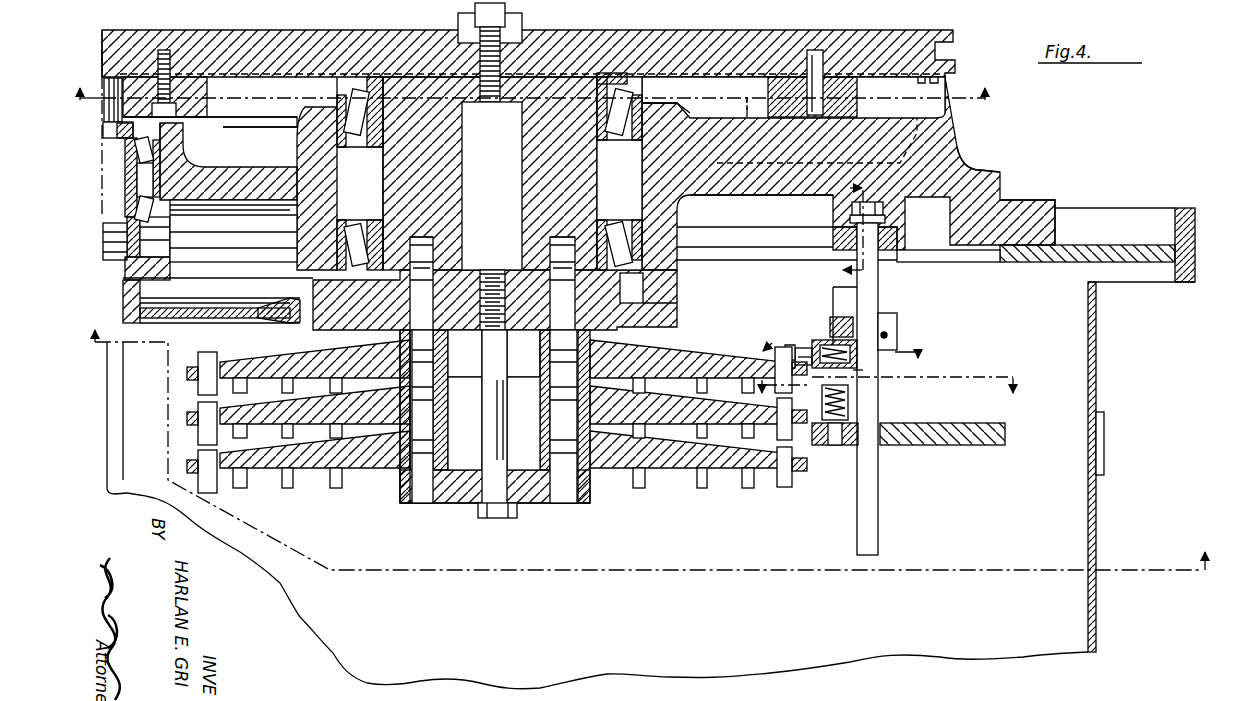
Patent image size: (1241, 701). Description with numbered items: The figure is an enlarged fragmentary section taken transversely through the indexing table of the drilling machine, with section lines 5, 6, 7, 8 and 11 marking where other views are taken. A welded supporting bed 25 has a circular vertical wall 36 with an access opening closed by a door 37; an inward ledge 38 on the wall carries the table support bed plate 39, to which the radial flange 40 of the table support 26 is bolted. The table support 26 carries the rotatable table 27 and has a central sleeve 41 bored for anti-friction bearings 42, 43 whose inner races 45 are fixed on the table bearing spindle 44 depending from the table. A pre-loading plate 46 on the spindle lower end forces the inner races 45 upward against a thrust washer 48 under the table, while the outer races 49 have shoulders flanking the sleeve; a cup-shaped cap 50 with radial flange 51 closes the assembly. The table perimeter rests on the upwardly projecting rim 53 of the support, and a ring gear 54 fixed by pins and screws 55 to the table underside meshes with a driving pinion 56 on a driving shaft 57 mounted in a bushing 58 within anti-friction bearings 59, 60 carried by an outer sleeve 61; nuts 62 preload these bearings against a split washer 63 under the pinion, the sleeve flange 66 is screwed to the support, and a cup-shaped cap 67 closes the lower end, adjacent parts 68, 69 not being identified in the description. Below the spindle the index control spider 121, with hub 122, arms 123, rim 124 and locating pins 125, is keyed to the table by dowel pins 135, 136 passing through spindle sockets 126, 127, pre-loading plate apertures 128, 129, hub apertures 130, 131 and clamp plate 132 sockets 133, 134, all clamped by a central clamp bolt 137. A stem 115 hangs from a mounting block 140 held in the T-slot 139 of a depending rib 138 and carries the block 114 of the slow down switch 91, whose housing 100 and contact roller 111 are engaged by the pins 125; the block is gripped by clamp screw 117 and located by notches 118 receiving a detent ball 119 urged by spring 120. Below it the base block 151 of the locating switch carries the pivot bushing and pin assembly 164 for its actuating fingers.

The supporting bed 25 is at (913, 650).
The table support 26 is at (947, 137).
The rotatable table 27 is at (918, 34).
The vertical wall 36 is at (1092, 335).
The door 37 is at (1098, 400).
The ledge 38 is at (1033, 262).
The table support bed plate 39 is at (1040, 205).
The radial flange 40 is at (990, 173).
The central sleeve 41 is at (787, 243).
The anti-friction bearing 42 is at (353, 150).
The anti-friction bearing 43 is at (355, 220).
The table bearing spindle 44 is at (533, 175).
The inner races 45 is at (607, 140).
The pre-loading plate 46 is at (643, 290).
The thrust bearing or washer 48 is at (613, 80).
The outer races 49 is at (647, 113).
The cup-shaped cap 50 is at (673, 305).
The radial flange 51 is at (707, 270).
The rim or flange 53 is at (953, 87).
The ring gear 54 is at (777, 87).
The pins and screws 55 is at (172, 60).
The driving pinion 56 is at (104, 88).
The driving shaft 57 is at (152, 181).
The bushing 58 is at (130, 195).
The anti-friction bearing 59 is at (168, 132).
The anti-friction bearing 60 is at (170, 223).
The outer sleeve 61 is at (160, 142).
The nuts 62 is at (160, 250).
The split washer 63 is at (117, 130).
The radial flange 66 is at (170, 211).
The cup-shaped cap 67 is at (173, 278).
The tube 68 is at (237, 313).
The nut 69 is at (303, 303).
The slow down or anticipating switch 91 is at (816, 294).
The housing 100 is at (848, 308).
The contact roller 111 is at (803, 348).
The block 114 is at (897, 317).
The stem or rod 115 is at (872, 284).
The clamp screw 117 is at (888, 336).
The notches 118 is at (863, 337).
The spring pressed detent or ball 119 is at (869, 362).
The spring 120 is at (825, 328).
The disc or spider 121 is at (730, 352).
The hub 122 is at (455, 360).
The arms 123 is at (337, 352).
The rim or ring 124 is at (225, 353).
The pins 125 is at (792, 345).
The socket 126 is at (450, 250).
The socket 127 is at (530, 300).
The aperture 128 is at (433, 285).
The aperture 129 is at (530, 305).
The aperture 130 is at (452, 362).
The aperture 131 is at (533, 366).
The clamp plate 132 is at (540, 503).
The socket 133 is at (403, 493).
The socket 134 is at (590, 490).
The dowel pins 135 is at (425, 418).
The dowel pins 136 is at (557, 410).
The central clamp bolt 137 is at (497, 518).
The depending rib 138 is at (828, 217).
The T-slot 139 is at (880, 204).
The mounting block 140 is at (893, 263).
The base block 151 is at (945, 446).
The bushing and pin assembly 164 is at (838, 446).
The section line 5- 5 is at (648, 460).
The section line 6- 6 is at (532, 133).
The section line 7- 7 is at (845, 229).
The section line 8- 8 is at (887, 394).
The section line 11- 11 is at (846, 345).